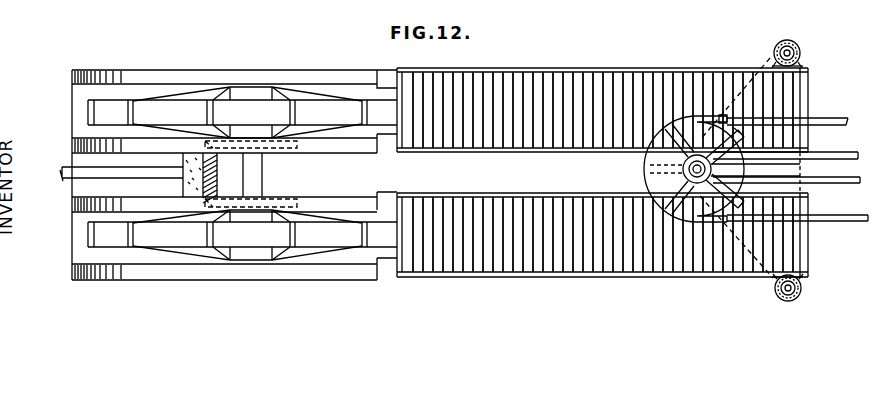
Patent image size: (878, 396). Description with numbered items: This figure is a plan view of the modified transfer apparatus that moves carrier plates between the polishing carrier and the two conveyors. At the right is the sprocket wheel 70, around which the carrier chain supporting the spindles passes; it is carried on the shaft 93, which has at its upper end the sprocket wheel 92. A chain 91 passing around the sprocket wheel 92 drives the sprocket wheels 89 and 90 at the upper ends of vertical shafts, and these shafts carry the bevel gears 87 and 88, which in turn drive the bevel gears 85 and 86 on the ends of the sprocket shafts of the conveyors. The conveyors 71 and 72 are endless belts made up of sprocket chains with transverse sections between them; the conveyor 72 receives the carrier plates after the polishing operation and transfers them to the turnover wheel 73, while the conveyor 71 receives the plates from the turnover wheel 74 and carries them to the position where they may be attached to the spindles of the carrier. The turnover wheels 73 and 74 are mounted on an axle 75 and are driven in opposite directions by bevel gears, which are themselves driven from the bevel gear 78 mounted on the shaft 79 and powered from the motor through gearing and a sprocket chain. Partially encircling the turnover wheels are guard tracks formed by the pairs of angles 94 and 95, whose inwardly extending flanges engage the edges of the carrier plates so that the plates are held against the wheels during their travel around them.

The sprocket wheel 70 is at (722, 115).
The conveyor 71 is at (583, 96).
The conveyor 72 is at (580, 252).
The turnover wheel 73 is at (160, 236).
The turnover wheel 74 is at (155, 103).
The axle 75 is at (262, 175).
The bevel gear 78 is at (219, 174).
The shaft 79 is at (62, 180).
The bevel gear 85 is at (803, 277).
The bevel gear 86 is at (802, 63).
The bevel gear 87 is at (802, 292).
The bevel gear 88 is at (802, 46).
The sprocket wheel 89 is at (776, 296).
The sprocket wheel 90 is at (787, 40).
The chain 91 is at (737, 242).
The sprocket wheel 92 is at (648, 169).
The shaft 93 is at (718, 170).
The angles 94 is at (352, 150).
The angles 95 is at (354, 72).